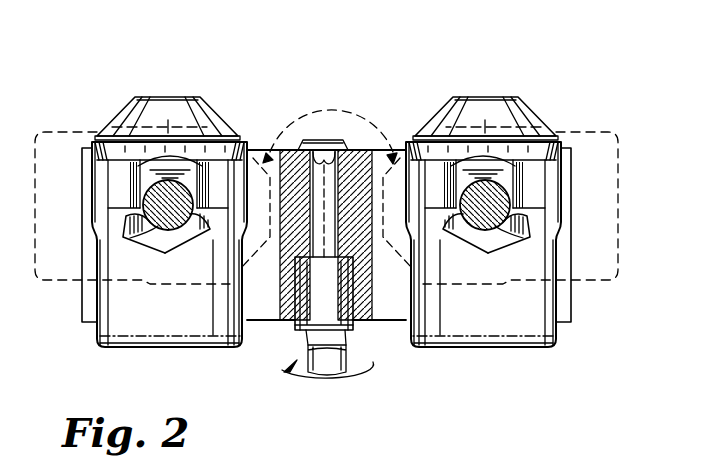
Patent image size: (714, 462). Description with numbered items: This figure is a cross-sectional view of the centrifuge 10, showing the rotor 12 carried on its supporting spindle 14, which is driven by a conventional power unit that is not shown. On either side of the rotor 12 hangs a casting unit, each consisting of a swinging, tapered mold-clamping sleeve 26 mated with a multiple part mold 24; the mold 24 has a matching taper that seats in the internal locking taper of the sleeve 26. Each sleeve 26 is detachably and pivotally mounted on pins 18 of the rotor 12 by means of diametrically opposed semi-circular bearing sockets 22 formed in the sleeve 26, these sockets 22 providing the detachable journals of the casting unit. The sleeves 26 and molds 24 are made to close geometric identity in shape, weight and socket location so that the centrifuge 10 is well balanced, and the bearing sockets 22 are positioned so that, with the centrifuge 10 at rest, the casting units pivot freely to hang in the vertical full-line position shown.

The centrifuge 10 is at (421, 90).
The rotor 12 is at (576, 291).
The supporting spindle 14 is at (357, 327).
The pins 18 is at (137, 238).
The semi-circular bearing sockets 22 is at (155, 222).
The multiple part mold 24 is at (123, 106).
The mold-clamping sleeve 26 is at (90, 330).